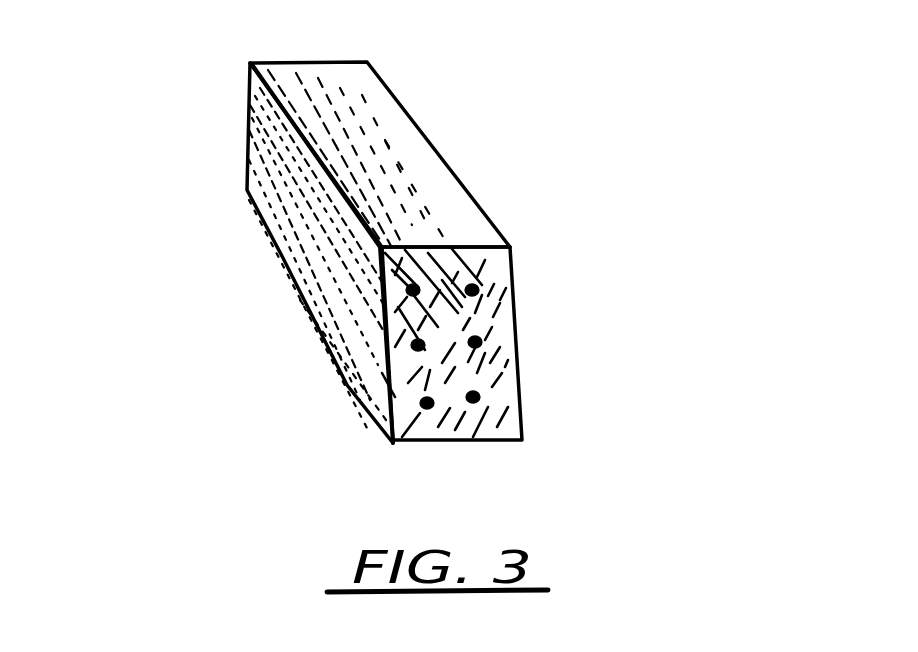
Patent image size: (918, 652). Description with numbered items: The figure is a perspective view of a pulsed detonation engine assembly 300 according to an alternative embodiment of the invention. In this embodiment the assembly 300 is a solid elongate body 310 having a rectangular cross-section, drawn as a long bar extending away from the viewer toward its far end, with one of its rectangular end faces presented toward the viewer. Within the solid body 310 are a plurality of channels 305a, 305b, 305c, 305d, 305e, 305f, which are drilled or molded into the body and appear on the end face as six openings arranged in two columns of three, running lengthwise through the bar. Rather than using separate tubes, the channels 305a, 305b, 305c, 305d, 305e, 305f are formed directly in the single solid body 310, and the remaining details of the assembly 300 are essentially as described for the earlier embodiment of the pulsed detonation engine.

The pulsed detonation engine assembly 300 is at (147, 143).
The solid elongate body 310 is at (483, 213).
The channel 305a is at (413, 292).
The channel 305b is at (474, 290).
The channel 305c is at (418, 346).
The channel 305d is at (477, 343).
The channel 305e is at (427, 406).
The channel 305f is at (474, 398).